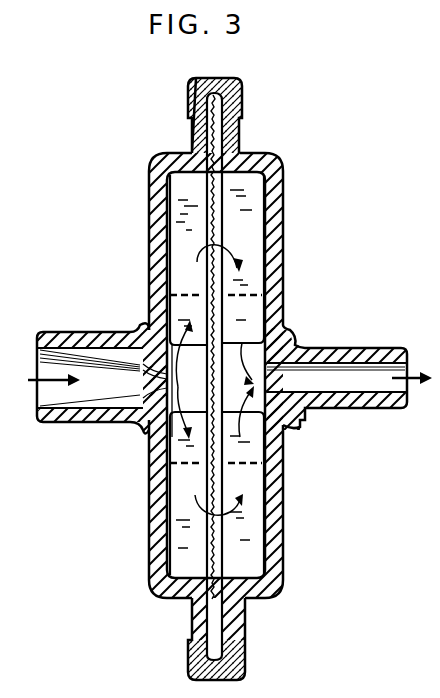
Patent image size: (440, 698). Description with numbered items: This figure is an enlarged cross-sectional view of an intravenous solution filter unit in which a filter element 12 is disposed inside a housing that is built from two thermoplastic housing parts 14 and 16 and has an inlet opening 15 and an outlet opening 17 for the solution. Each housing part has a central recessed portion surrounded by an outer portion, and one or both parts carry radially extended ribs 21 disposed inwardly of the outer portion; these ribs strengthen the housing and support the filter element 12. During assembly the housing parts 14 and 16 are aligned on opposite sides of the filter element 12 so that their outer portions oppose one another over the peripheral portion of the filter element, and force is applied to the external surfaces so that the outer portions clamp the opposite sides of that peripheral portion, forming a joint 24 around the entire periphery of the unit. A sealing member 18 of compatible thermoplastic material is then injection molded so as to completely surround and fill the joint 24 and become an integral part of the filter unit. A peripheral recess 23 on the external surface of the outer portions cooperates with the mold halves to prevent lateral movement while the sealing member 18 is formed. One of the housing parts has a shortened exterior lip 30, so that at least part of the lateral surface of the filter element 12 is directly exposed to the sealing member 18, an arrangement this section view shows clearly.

The filter element 12 is at (210, 278).
The housing part 14 is at (150, 206).
The inlet opening 15 is at (65, 418).
The housing part 16 is at (283, 217).
The outlet opening 17 is at (380, 410).
The sealing member 18 is at (190, 90).
The radially extended ribs 21 is at (283, 537).
The peripheral recess 23 is at (194, 610).
The joint 24 is at (234, 652).
The shortened exterior lip 30 is at (222, 110).